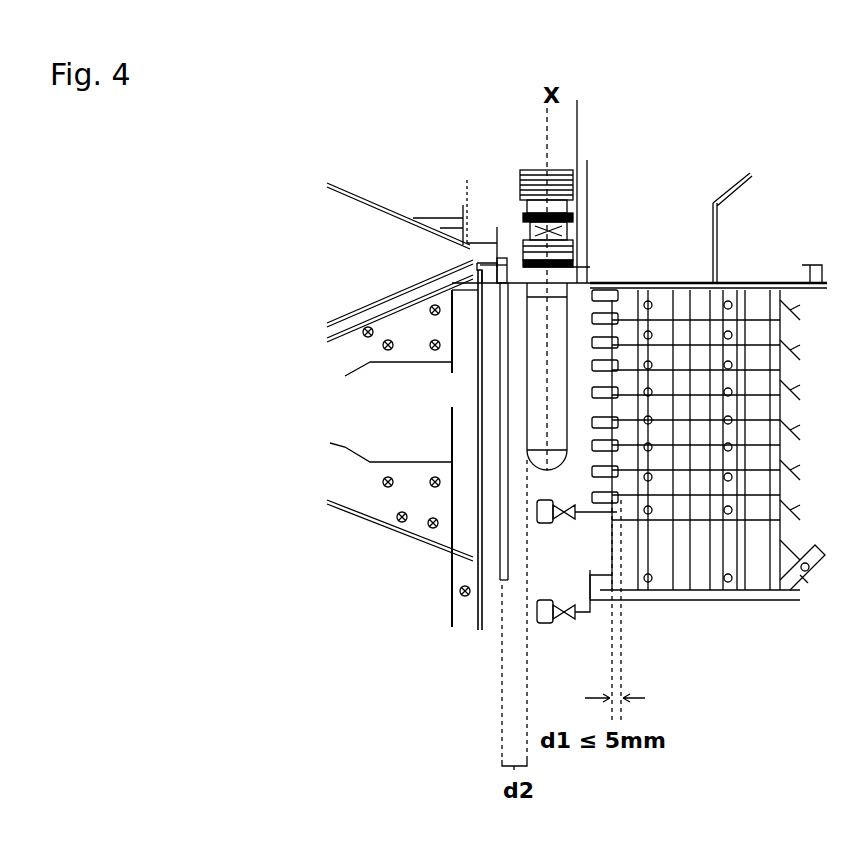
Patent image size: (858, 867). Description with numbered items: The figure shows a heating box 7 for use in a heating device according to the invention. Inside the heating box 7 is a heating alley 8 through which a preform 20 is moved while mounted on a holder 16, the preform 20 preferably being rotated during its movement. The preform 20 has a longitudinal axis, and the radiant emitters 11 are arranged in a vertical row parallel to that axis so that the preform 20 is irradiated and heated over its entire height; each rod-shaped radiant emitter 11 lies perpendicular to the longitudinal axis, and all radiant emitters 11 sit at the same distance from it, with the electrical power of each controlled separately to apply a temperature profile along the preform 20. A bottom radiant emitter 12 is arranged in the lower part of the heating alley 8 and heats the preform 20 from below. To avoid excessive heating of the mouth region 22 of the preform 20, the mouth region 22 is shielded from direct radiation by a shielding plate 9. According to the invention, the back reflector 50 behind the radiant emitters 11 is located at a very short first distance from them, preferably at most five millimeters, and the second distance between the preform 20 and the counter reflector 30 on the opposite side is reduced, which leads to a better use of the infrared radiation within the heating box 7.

The heating box 7 is at (737, 287).
The heating alley 8 is at (568, 577).
The shielding plate 9 is at (587, 160).
The radiant emitter 11 is at (600, 393).
The bottom radiant emitter 12 is at (530, 511).
The holder 16 is at (577, 100).
The preform 20 is at (550, 297).
The mouth region 22 is at (530, 282).
The counter reflector 30 is at (493, 550).
The back reflector 50 is at (625, 537).